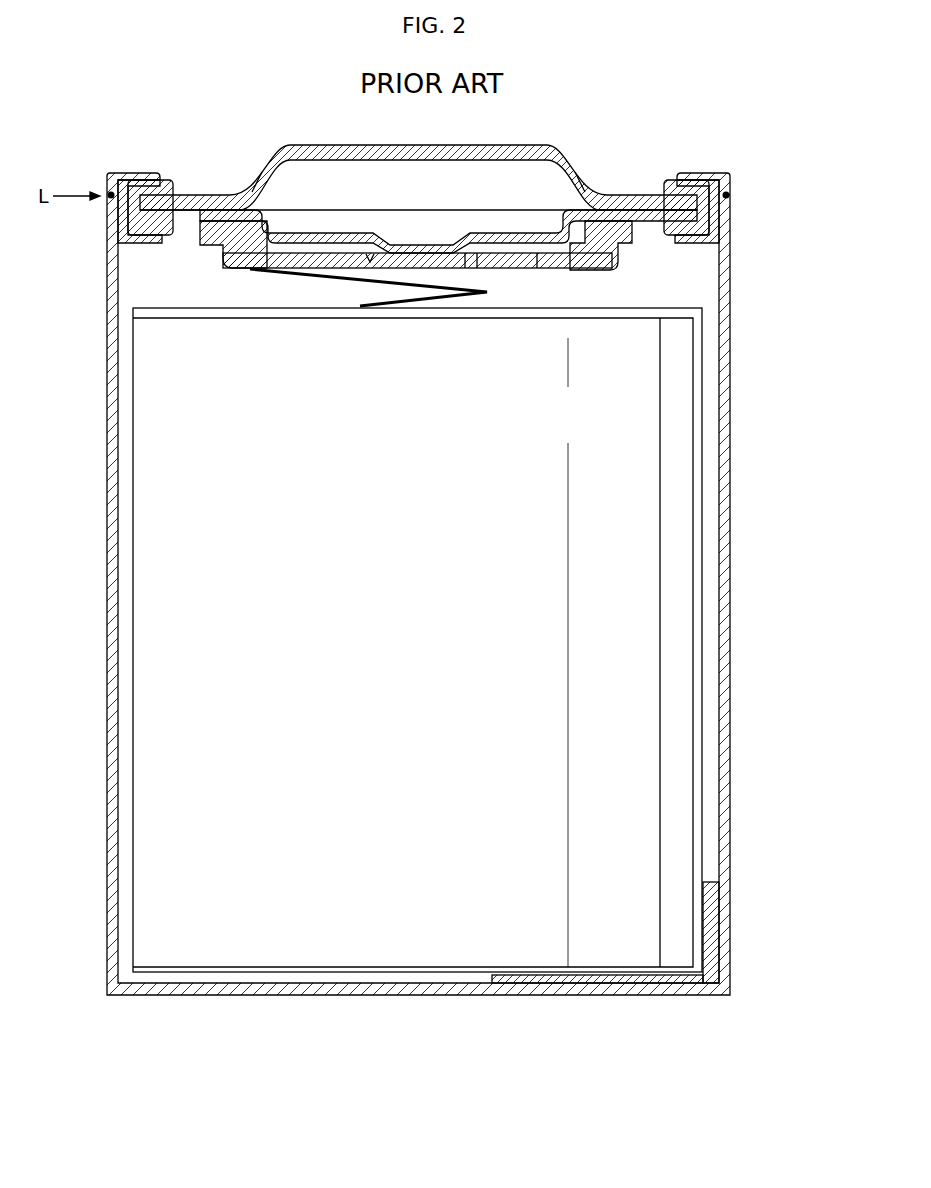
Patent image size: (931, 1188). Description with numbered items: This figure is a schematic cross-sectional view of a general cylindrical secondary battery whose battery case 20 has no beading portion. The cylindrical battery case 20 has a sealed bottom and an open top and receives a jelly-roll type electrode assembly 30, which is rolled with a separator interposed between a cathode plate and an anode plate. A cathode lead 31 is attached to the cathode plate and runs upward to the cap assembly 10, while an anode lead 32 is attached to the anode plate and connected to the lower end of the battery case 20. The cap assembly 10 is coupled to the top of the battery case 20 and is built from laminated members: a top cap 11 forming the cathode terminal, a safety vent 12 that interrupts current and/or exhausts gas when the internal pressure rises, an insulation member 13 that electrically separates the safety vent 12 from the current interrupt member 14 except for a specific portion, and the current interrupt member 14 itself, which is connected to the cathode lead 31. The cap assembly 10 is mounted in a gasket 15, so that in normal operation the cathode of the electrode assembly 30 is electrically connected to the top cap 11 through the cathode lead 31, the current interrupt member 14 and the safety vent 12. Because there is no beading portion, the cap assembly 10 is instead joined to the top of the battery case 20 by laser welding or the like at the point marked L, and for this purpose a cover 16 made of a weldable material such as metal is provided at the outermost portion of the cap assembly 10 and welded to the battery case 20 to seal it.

The cap assembly 10 is at (473, 221).
The top cap 11 is at (693, 202).
The safety vent 12 is at (693, 218).
The insulation member 13 is at (632, 223).
The current interrupt member 14 is at (505, 269).
The gasket 15 is at (696, 190).
The cover 16 is at (698, 172).
The battery case 20 is at (727, 502).
The electrode assembly 30 is at (688, 453).
The cathode lead 31 is at (488, 292).
The anode lead 32 is at (706, 909).